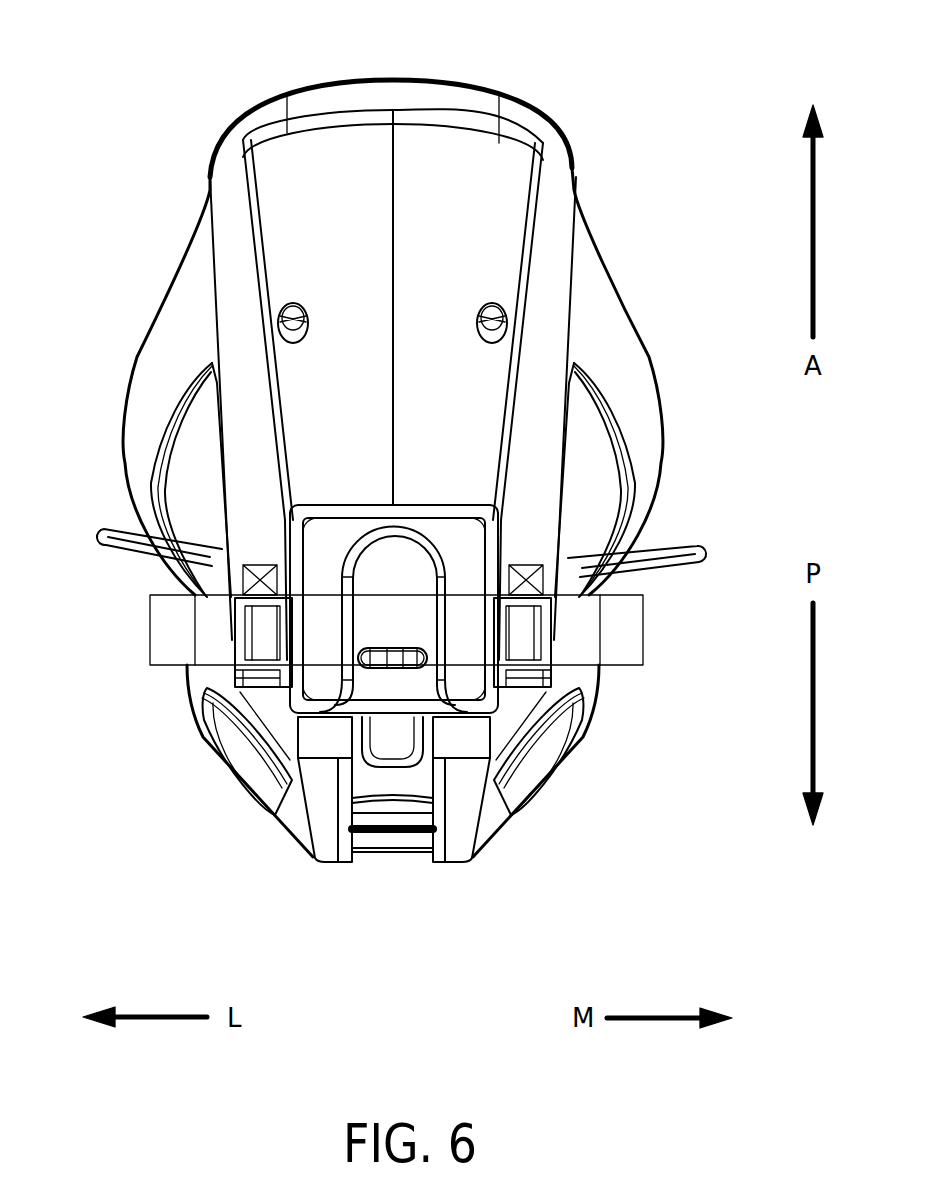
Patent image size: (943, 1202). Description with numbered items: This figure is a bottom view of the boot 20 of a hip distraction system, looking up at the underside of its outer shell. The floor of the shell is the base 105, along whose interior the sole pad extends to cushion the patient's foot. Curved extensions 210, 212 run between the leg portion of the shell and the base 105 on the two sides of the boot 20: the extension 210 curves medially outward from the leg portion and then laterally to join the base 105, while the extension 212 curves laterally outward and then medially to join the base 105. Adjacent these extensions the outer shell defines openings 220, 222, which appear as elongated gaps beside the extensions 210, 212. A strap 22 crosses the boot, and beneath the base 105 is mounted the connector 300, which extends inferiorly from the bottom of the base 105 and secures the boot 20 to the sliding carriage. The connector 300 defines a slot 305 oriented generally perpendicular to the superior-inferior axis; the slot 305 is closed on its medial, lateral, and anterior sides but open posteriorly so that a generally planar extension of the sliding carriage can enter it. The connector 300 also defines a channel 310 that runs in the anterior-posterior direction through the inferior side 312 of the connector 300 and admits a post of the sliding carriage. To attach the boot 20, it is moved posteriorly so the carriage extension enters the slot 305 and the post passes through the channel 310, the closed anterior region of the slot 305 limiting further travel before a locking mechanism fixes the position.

The boot 20 is at (97, 45).
The base 105 is at (490, 190).
The curved extension 210 is at (627, 356).
The curved extension 212 is at (140, 392).
The opening 222 is at (212, 493).
The opening 220 is at (612, 493).
The strap 22 is at (643, 627).
The connector 300 is at (326, 537).
The channel 310 is at (400, 548).
The inferior side 312 is at (327, 660).
The slot 305 is at (403, 705).